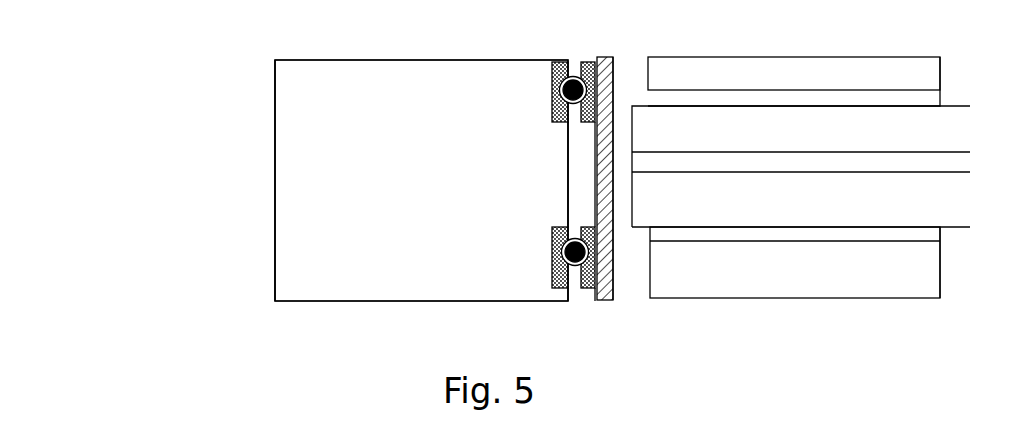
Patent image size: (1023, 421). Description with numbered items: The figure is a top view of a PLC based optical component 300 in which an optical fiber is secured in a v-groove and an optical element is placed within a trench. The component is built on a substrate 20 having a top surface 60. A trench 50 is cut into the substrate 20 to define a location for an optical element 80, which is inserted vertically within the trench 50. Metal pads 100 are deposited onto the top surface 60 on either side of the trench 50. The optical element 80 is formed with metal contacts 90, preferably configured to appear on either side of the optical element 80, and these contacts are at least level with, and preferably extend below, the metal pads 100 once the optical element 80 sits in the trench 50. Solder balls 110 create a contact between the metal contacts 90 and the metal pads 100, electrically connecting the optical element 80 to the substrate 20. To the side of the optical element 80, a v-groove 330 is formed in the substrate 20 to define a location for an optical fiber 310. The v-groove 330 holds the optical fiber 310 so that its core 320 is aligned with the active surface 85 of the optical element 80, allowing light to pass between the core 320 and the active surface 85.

The PLC based optical component 300 is at (405, 47).
The substrate 20 is at (275, 210).
The top surface 60 is at (390, 287).
The trench 50 is at (587, 320).
The solder balls 110 is at (563, 72).
The metal contacts 90 is at (583, 62).
The metal pads 100 is at (552, 85).
The optical element 80 is at (603, 303).
The active surface 85 is at (614, 140).
The v-groove 330 is at (653, 102).
The core 320 is at (663, 166).
The optical fiber 310 is at (810, 212).